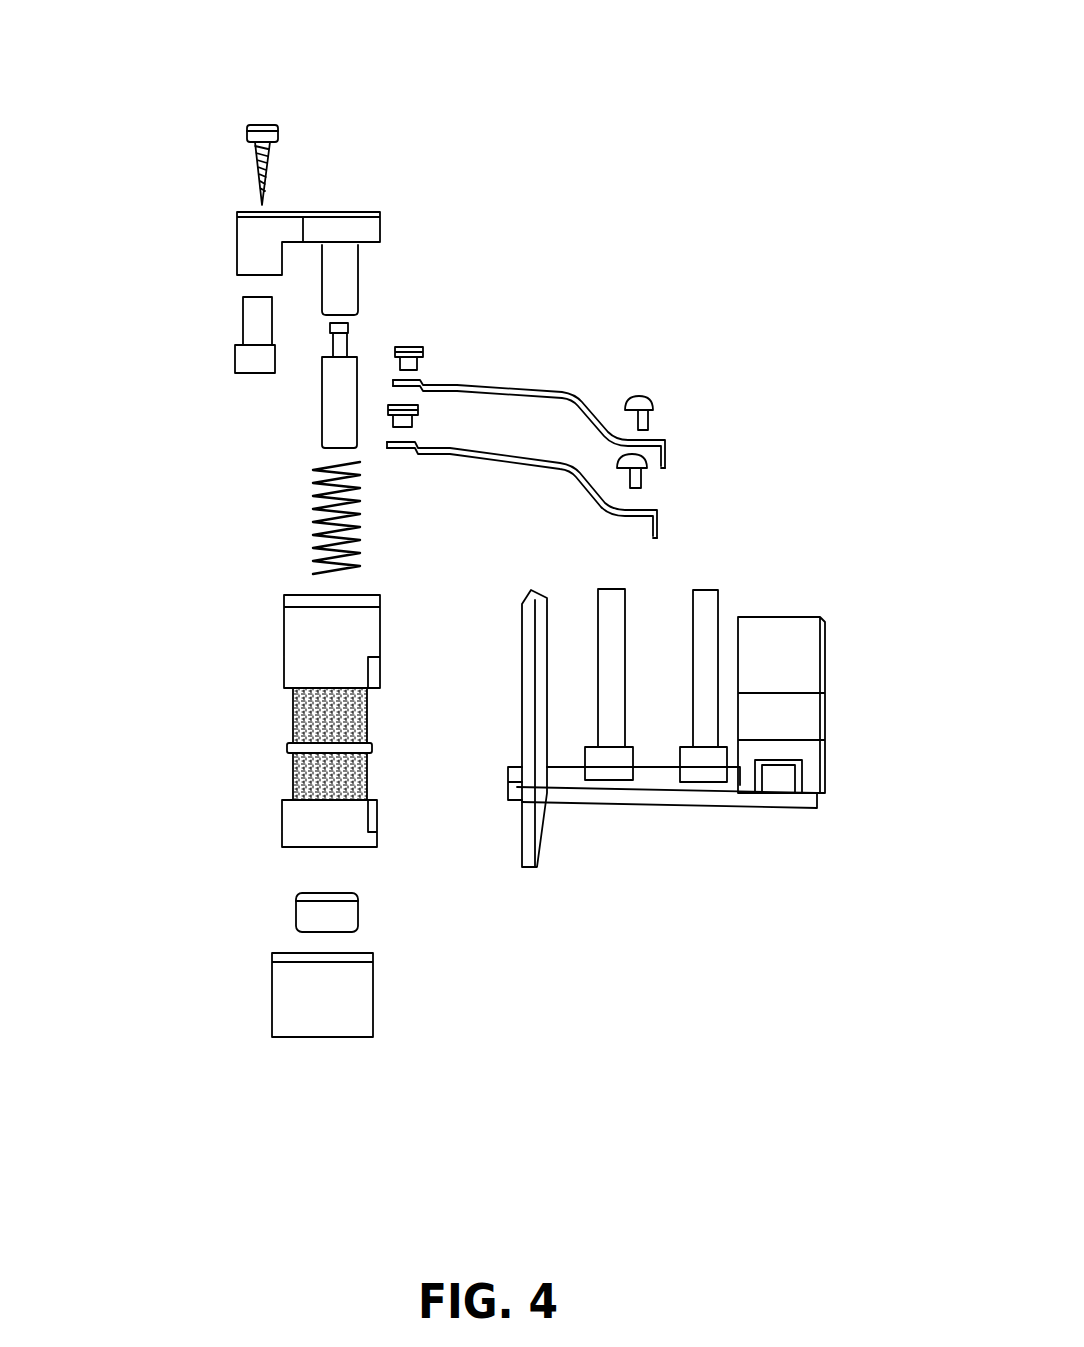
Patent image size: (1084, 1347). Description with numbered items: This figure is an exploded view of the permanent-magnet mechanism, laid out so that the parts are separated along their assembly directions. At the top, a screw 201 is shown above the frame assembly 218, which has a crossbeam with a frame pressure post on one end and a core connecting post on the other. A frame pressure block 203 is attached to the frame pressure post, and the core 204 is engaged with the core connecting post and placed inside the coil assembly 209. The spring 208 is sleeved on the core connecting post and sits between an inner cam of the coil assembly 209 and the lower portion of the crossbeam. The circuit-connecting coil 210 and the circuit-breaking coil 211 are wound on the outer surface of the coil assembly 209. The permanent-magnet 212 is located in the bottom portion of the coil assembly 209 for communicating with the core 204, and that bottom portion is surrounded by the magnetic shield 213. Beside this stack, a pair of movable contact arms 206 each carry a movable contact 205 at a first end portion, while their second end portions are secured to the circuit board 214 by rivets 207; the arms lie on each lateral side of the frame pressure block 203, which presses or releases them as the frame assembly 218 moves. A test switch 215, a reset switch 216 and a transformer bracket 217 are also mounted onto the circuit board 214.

The screw 201 is at (244, 126).
The frame assembly 218 is at (252, 235).
The frame pressure block 203 is at (253, 323).
The core 204 is at (328, 435).
The movable contact 205 is at (414, 400).
The movable contact arms 206 is at (527, 455).
The rivets 207 is at (649, 433).
The spring 208 is at (303, 513).
The coil assembly 209 is at (315, 653).
The circuit-connecting coil 210 is at (292, 713).
The circuit-breaking coil 211 is at (290, 772).
The permanent-magnet 212 is at (300, 912).
The magnetic shield 213 is at (297, 1005).
The circuit board 214 is at (545, 860).
The test switch 215 is at (626, 632).
The reset switch 216 is at (723, 604).
The transformer bracket 217 is at (813, 641).